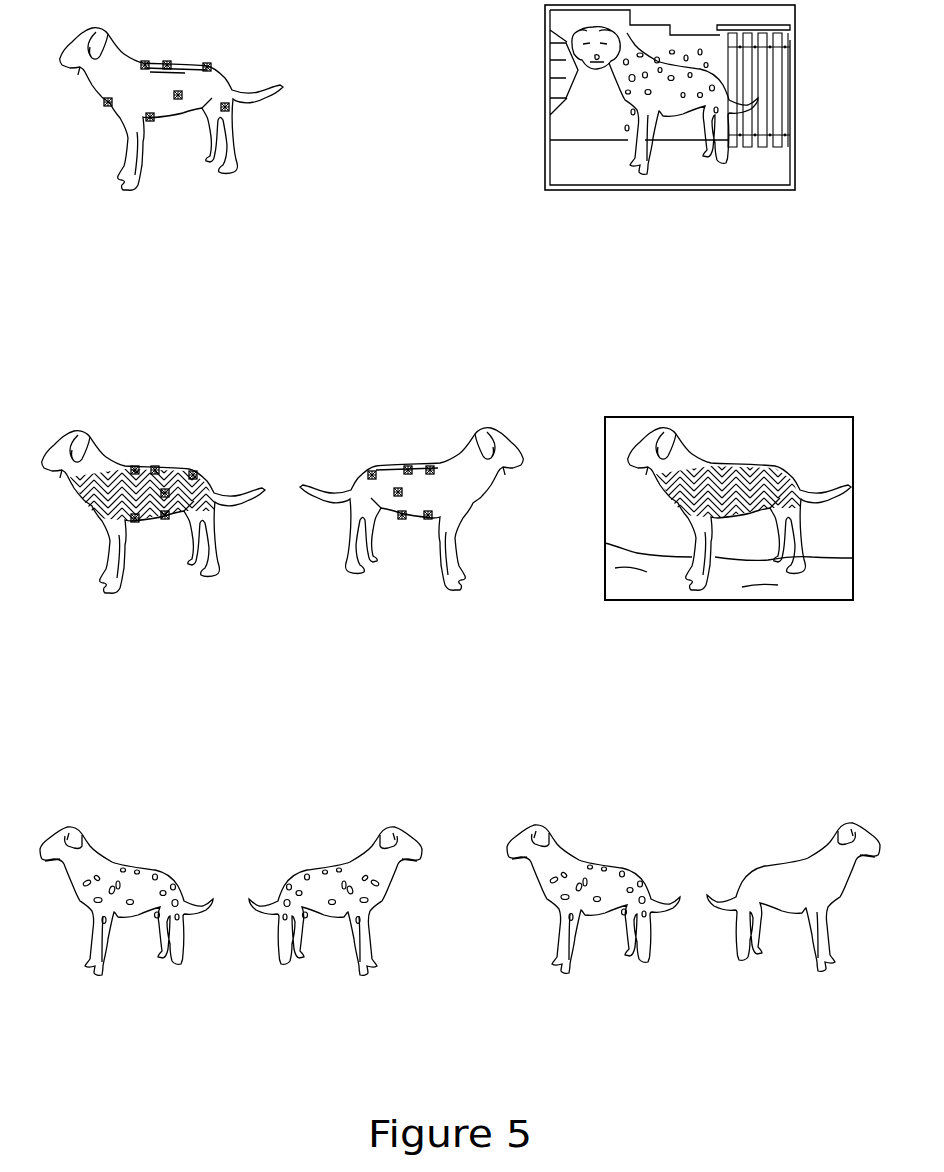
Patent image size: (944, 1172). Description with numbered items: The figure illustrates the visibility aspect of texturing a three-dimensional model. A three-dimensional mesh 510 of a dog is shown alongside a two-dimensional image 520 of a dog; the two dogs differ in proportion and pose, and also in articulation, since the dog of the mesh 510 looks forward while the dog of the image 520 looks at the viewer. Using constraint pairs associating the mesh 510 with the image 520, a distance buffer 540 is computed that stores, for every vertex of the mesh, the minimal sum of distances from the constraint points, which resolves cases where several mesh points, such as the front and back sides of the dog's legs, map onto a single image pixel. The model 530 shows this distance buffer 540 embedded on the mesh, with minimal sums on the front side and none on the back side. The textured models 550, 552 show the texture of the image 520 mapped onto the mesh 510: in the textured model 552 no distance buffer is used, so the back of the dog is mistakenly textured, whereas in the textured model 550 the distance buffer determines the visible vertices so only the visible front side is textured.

The 3D mesh 510 is at (300, 276).
The 2D image 520 is at (679, 276).
The model 530 is at (302, 663).
The distance buffer 540 is at (679, 663).
The textured model 550 is at (699, 1046).
The textured model 552 is at (302, 1046).